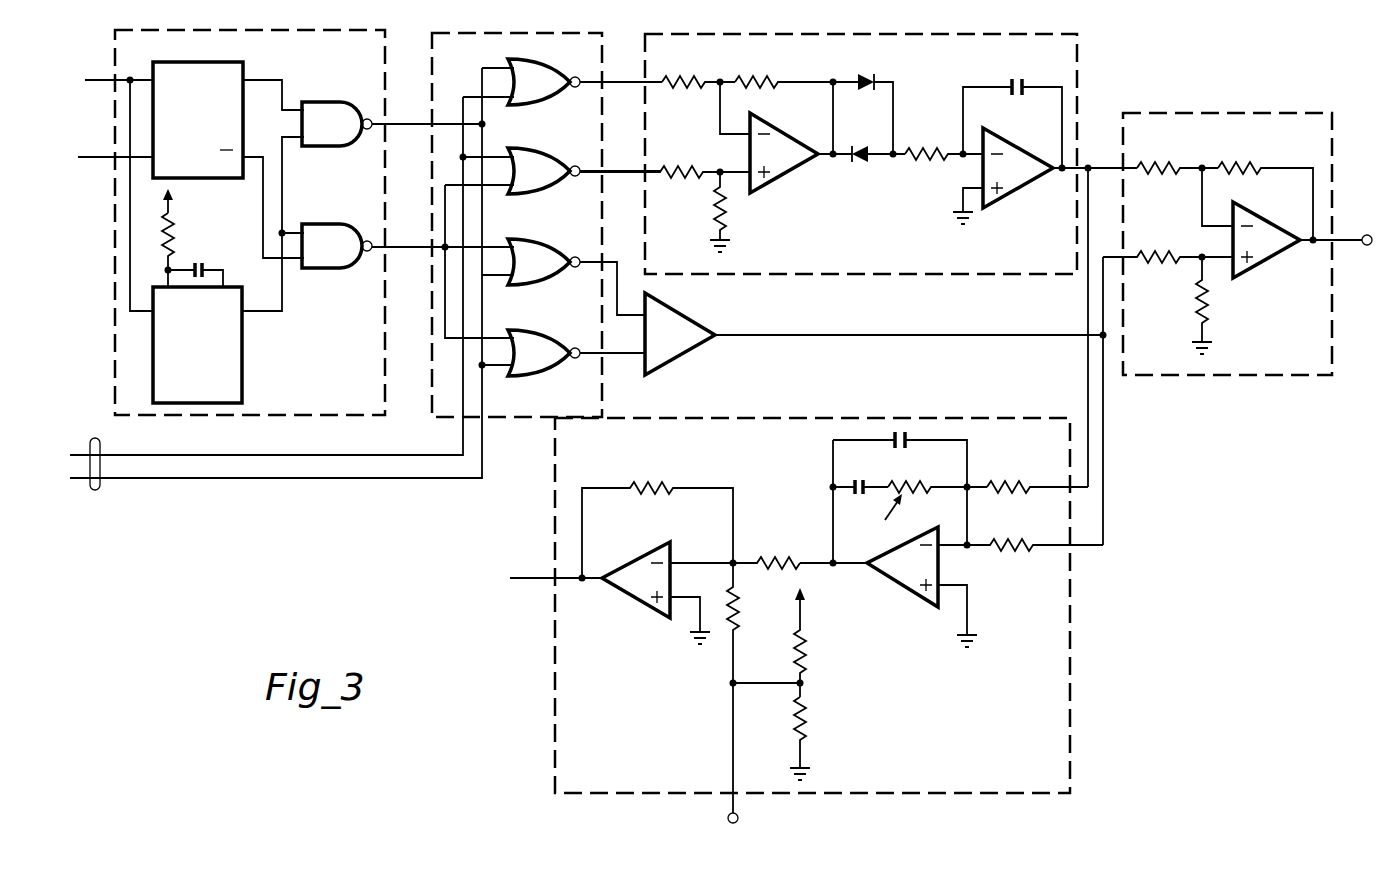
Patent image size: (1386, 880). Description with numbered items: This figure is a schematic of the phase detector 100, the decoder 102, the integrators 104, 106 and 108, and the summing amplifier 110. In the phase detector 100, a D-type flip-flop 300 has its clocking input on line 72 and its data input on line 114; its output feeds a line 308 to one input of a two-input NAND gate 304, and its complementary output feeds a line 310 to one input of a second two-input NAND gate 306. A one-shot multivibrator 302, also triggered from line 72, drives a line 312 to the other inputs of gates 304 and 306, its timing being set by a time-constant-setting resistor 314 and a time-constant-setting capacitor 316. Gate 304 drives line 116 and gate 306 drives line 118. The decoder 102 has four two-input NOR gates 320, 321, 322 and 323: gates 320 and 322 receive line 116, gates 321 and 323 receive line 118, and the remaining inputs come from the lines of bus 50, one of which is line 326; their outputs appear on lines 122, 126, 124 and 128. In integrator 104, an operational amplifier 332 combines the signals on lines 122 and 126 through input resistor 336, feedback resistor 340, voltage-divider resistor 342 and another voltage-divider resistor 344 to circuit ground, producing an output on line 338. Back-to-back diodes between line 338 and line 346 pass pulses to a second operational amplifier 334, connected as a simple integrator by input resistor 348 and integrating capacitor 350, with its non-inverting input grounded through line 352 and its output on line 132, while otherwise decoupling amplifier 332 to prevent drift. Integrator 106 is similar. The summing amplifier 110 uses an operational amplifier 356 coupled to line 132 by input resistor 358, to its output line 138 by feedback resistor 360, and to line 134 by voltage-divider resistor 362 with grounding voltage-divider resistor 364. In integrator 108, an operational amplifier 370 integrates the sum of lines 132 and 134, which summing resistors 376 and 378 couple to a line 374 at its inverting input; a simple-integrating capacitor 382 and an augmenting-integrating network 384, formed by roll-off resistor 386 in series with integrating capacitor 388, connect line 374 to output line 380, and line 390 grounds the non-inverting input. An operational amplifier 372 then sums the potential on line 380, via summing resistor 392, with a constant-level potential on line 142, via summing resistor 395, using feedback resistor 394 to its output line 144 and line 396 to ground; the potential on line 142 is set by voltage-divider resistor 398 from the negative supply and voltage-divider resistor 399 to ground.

The bus 50 is at (96, 488).
The line 72 is at (108, 80).
The phase detector 100 is at (243, 416).
The decoder 102 is at (518, 418).
The integrator 104 is at (838, 275).
The integrator 106 is at (672, 358).
The integrator 108 is at (1072, 586).
The summing amplifier 110 is at (1215, 376).
The line 114 is at (96, 157).
The line 116 is at (416, 123).
The line 118 is at (416, 246).
The line 122 is at (619, 82).
The line 124 is at (630, 254).
The line 126 is at (619, 169).
The line 128 is at (618, 355).
The line 132 is at (1091, 164).
The line 134 is at (862, 336).
The line 138 is at (1347, 250).
The line 142 is at (732, 798).
The line 144 is at (522, 579).
The D-type flip-flop 300 is at (208, 127).
The one-shot multivibrator 302 is at (208, 362).
The two-input NAND gate 304 is at (346, 136).
The two-input NAND gate 306 is at (346, 258).
The line 308 is at (276, 80).
The line 310 is at (261, 215).
The line 312 is at (288, 297).
The time-constant-setting resistor 314 is at (172, 236).
The time-constant-setting capacitor 316 is at (203, 262).
The two-input NOR gate 320 is at (554, 94).
The two-input NOR gate 321 is at (554, 183).
The two-input NOR gate 322 is at (554, 274).
The two-input NOR gate 323 is at (554, 365).
The line 326 is at (464, 88).
The operational amplifier 332 is at (798, 121).
The operational amplifier 334 is at (1022, 128).
The input resistor 336 is at (688, 64).
The line 338 is at (843, 111).
The feedback resistor 340 is at (760, 64).
The voltage-divider resistor 342 is at (688, 154).
The resistor 344 is at (713, 207).
The line 346 is at (890, 80).
The input resistor 348 is at (915, 144).
The integrating capacitor 350 is at (1013, 79).
The line 352 is at (958, 188).
The operational amplifier 356 is at (1277, 257).
The input resistor 358 is at (1163, 149).
The feedback resistor 360 is at (1250, 149).
The voltage-divider resistor 362 is at (1170, 239).
The voltage-divider resistor 364 is at (1194, 294).
The operational amplifier 370 is at (880, 575).
The operational amplifier 372 is at (635, 555).
The line 374 is at (970, 441).
The summing resistor 376 is at (1009, 484).
The summing resistor 378 is at (1018, 532).
The line 380 is at (855, 562).
The simple-integrating capacitor 382 is at (903, 440).
The augmenting-integrating network 384 is at (872, 514).
The roll-off resistor 386 is at (907, 497).
The integrating capacitor 388 is at (865, 468).
The line 390 is at (970, 600).
The summing resistor 392 is at (777, 554).
The feedback resistor 394 is at (650, 482).
The summing resistor 395 is at (737, 600).
The line 396 is at (712, 591).
The voltage-divider resistor 398 is at (806, 649).
The voltage-divider resistor 399 is at (806, 732).